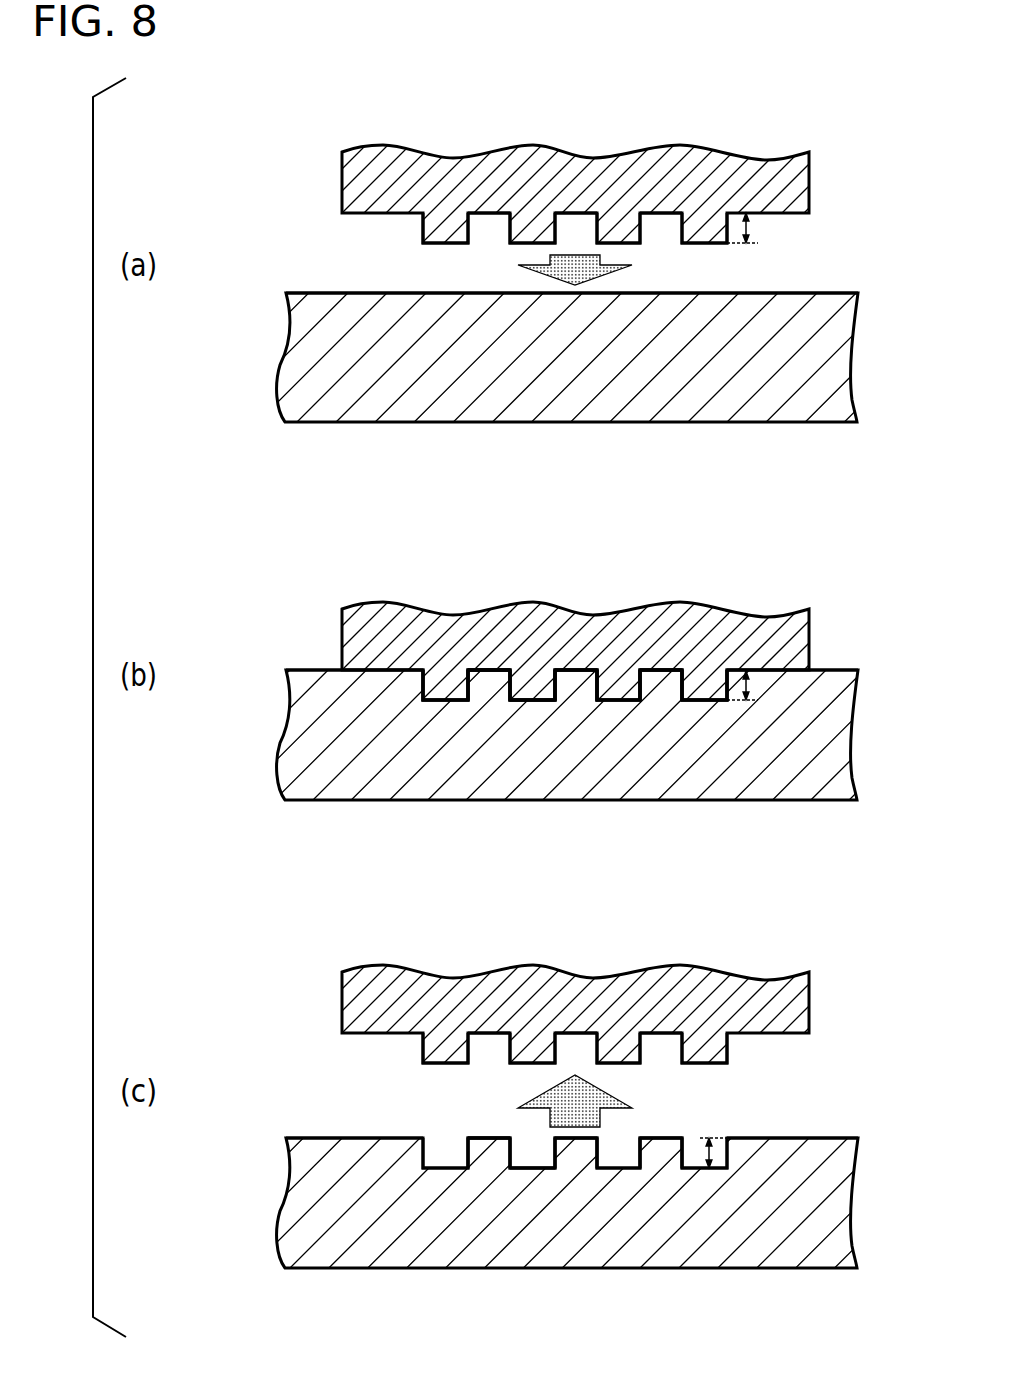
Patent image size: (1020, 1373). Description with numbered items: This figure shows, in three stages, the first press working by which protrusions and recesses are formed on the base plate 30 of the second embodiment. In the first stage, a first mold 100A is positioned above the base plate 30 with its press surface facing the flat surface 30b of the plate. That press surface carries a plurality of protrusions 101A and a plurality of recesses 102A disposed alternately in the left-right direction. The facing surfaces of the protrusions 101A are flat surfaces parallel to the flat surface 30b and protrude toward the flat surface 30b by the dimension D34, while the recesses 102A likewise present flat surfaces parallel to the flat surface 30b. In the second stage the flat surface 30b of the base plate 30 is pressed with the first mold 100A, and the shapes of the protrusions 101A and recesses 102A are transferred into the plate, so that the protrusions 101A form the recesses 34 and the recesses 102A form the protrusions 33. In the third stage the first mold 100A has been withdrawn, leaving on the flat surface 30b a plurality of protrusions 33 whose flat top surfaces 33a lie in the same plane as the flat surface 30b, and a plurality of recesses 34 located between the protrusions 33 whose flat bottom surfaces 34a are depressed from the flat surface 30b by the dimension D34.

The first mold 100A is at (342, 181).
The protrusion of first mold 101A is at (640, 238).
The recess of first mold 102A is at (662, 216).
The base plate 30 is at (597, 423).
The flat surface 30b is at (318, 293).
The protrusion 33 is at (492, 676).
The top surface 33a is at (469, 1008).
The recess 34 is at (530, 695).
The bottom surface 34a is at (536, 1023).
The dimension D34 is at (757, 233).